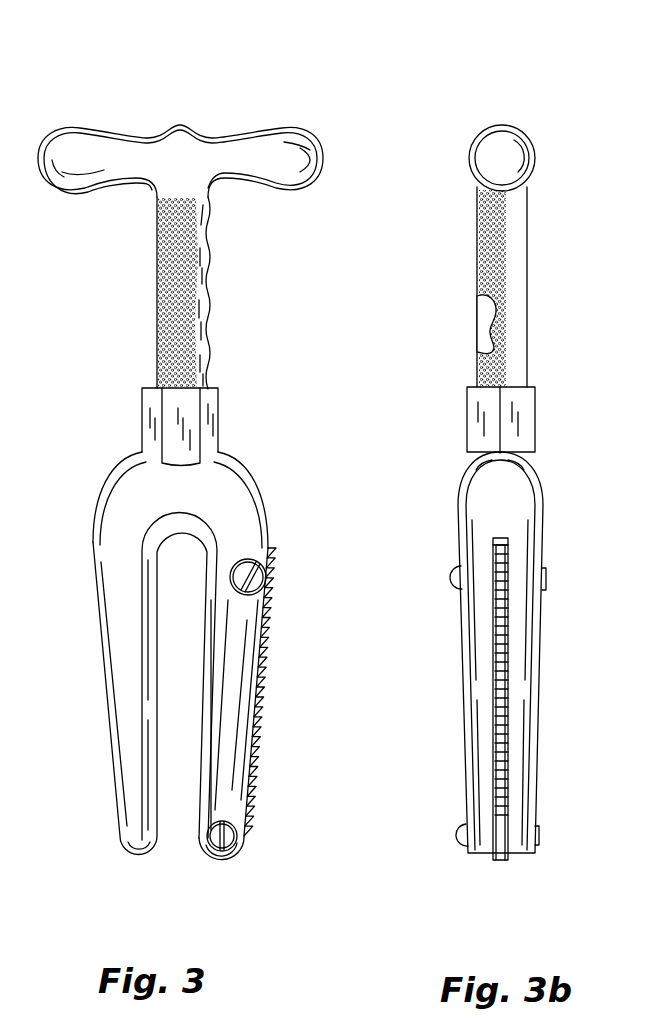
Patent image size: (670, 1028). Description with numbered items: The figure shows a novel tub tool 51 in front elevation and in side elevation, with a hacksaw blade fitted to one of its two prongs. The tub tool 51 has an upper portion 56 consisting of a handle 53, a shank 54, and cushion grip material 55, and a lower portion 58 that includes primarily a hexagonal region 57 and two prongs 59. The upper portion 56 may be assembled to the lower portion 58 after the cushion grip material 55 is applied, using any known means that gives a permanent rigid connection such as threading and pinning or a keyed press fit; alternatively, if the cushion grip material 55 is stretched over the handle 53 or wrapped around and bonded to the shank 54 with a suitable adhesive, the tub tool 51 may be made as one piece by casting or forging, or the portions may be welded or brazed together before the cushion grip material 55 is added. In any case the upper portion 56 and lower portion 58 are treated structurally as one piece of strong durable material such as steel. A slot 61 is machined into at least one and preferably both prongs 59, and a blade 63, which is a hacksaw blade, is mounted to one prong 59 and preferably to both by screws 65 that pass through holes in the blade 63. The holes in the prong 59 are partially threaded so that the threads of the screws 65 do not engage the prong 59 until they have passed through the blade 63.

In FIG. 3, the tub tool 51 is at (197, 85).
In FIG. 3, the handle 53 is at (308, 128).
In FIG. 3B, the handle 53 is at (470, 157).
In FIG. 3B, the shank 54 is at (478, 320).
In FIG. 3, the cushion grip material 55 is at (208, 288).
In FIG. 3B, the cushion grip material 55 is at (478, 257).
In FIG. 3, the upper portion 56 is at (118, 258).
In FIG. 3, the hexagonal region 57 is at (218, 415).
In FIG. 3B, the hexagonal region 57 is at (467, 413).
In FIG. 3, the lower portion 58 is at (92, 442).
In FIG. 3, the prongs 59 is at (105, 703).
In FIG. 3B, the prongs 59 is at (462, 715).
In FIG. 3B, the slot 61 is at (502, 537).
In FIG. 3, the blade 63 is at (267, 690).
In FIG. 3B, the blade 63 is at (502, 862).
In FIG. 3, the screws 65 is at (267, 577).
In FIG. 3B, the screws 65 is at (457, 587).